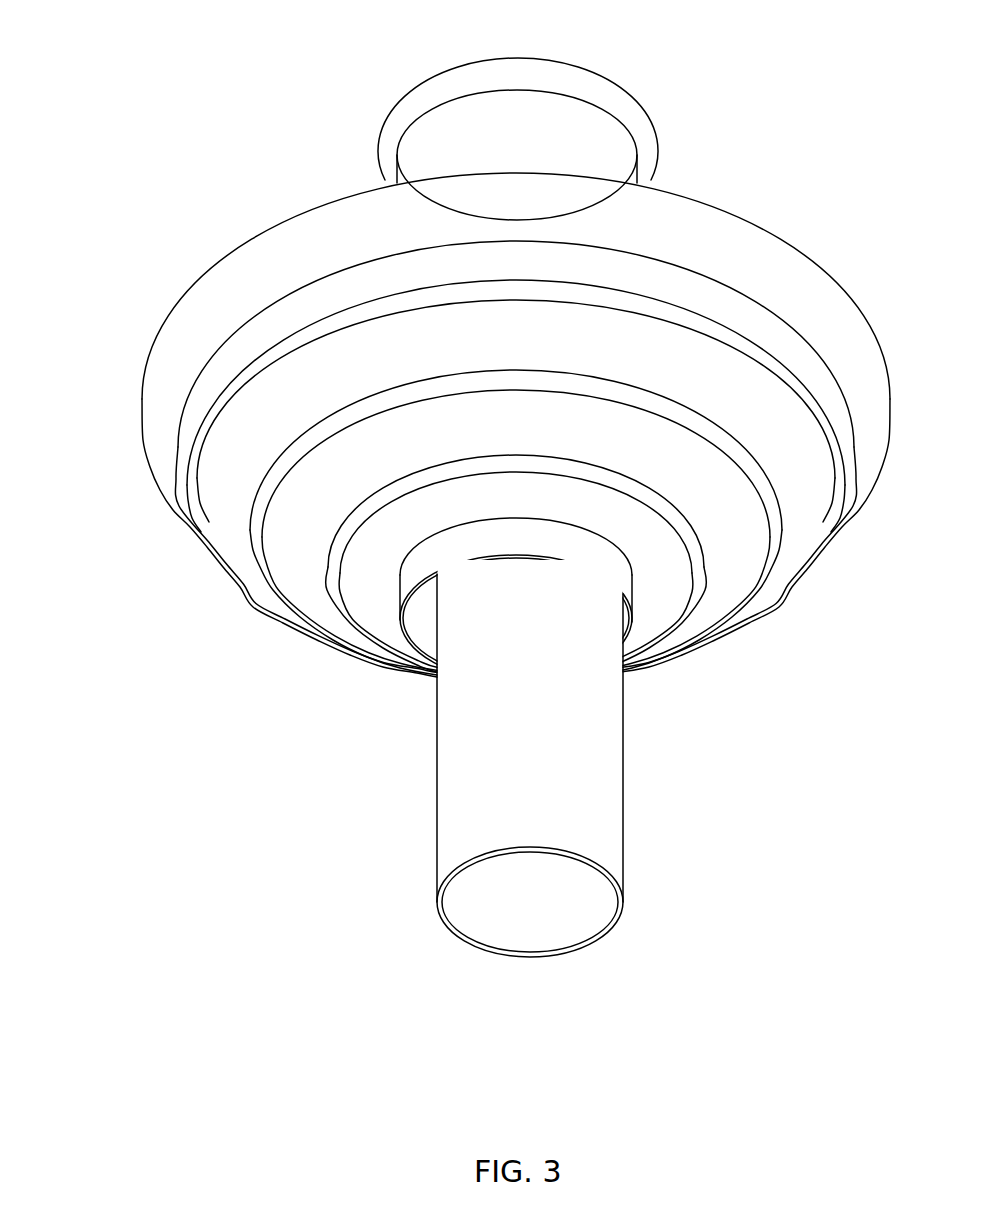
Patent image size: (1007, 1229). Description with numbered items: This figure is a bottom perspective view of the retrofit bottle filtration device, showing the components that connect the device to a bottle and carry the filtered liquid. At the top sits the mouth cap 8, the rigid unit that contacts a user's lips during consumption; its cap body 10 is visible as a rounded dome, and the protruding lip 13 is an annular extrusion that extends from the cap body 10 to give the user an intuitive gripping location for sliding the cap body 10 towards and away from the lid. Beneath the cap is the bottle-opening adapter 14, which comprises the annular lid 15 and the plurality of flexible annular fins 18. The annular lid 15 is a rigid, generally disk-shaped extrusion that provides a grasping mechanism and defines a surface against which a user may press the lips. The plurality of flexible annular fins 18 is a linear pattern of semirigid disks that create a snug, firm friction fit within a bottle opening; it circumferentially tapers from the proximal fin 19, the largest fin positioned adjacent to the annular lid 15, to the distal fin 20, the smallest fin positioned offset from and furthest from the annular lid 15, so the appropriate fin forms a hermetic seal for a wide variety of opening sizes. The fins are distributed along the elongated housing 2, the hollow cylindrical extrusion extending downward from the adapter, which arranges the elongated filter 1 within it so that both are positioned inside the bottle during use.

The mouth cap 8 is at (390, 37).
The bottle-opening adapter 14 is at (158, 229).
The protruding lip 13 is at (639, 118).
The cap body 10 is at (538, 149).
The annular lid 15 is at (812, 273).
The proximal fin 19 is at (218, 550).
The plurality of flexible annular fins 18 is at (237, 700).
The distal fin 20 is at (403, 656).
The elongated housing 2 is at (455, 768).
The elongated filter 1 is at (493, 937).